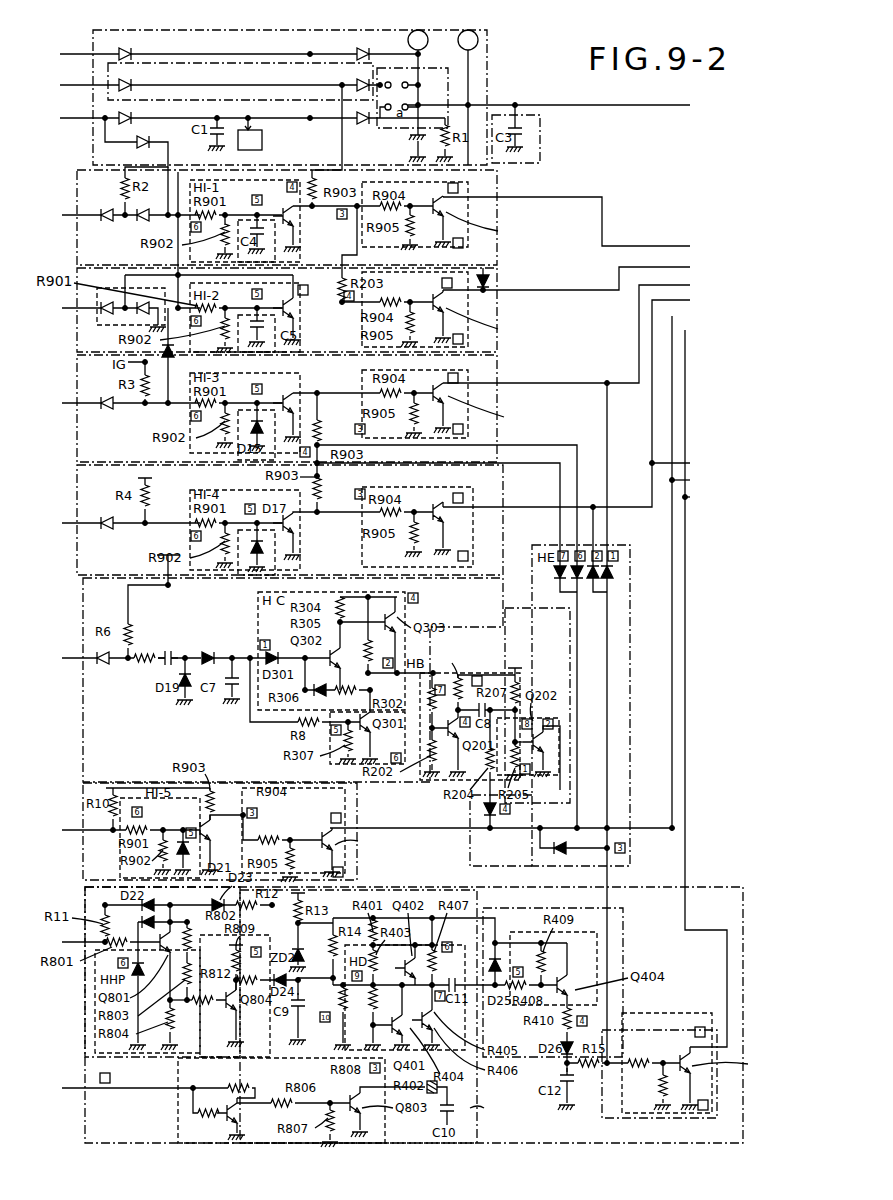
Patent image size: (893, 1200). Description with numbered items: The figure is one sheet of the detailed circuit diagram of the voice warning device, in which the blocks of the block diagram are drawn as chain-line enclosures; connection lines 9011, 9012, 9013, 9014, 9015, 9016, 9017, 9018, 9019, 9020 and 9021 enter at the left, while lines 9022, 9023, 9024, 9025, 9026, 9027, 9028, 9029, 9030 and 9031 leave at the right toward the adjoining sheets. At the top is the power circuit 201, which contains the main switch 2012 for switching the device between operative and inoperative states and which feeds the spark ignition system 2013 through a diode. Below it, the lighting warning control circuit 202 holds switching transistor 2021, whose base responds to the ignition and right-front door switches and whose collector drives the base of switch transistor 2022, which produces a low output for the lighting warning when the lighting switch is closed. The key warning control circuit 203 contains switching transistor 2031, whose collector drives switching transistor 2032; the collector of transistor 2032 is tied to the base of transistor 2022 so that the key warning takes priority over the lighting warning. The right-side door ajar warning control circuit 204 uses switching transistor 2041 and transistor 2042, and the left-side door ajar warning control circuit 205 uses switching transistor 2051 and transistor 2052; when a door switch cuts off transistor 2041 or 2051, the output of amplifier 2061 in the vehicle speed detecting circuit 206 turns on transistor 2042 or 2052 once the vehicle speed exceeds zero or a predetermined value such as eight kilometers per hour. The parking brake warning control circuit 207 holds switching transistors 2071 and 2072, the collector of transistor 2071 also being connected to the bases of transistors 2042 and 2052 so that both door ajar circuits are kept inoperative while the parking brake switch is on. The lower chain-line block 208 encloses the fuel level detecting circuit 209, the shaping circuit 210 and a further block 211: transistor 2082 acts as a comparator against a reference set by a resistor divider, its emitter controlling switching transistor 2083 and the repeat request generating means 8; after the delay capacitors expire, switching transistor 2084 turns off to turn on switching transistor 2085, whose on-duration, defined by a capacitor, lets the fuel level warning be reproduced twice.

The input signal line 9011 is at (231, 47).
The input signal line 9012 is at (231, 81).
The input signal line 9013 is at (244, 131).
The input signal line 9014 is at (121, 237).
The input signal line 9015 is at (168, 302).
The input signal line 9016 is at (121, 358).
The input signal line 9017 is at (121, 516).
The input signal line 9018 is at (154, 660).
The input signal line 9019 is at (116, 823).
The input signal line 9020 is at (96, 942).
The input signal line 9021 is at (120, 1091).
The output signal line 9022 is at (571, 105).
The output signal line 9023 is at (589, 226).
The output signal line 9024 is at (589, 275).
The output signal line 9025 is at (589, 330).
The output signal line 9026 is at (589, 400).
The output signal line 9027 is at (672, 316).
The output signal line 9028 is at (685, 330).
The output signal line 9029 is at (692, 463).
The output signal line 9030 is at (703, 480).
The output signal line 9031 is at (710, 497).
The power circuit 201 is at (487, 100).
The lighting warning control circuit 202 is at (497, 222).
The key warning control circuit 203 is at (497, 320).
The right-side door ajar warning control circuit 204 is at (497, 374).
The left-side door ajar warning control circuit 205 is at (503, 494).
The vehicle speed detecting circuit 206 is at (505, 640).
The parking brake warning control circuit 207 is at (357, 816).
The control circuit block 208 is at (703, 885).
The fuel level detecting circuit 209 is at (100, 908).
The shaping circuit 210 is at (357, 885).
The circuit block 211 is at (545, 908).
The main switch 2012 is at (471, 25).
The spark ignition system 2013 is at (262, 140).
The switching transistor 2021 is at (290, 203).
The switch transistor 2022 is at (472, 213).
The switching transistor 2031 is at (296, 300).
The switching transistor 2032 is at (467, 308).
The switching transistor 2041 is at (300, 384).
The transistor 2042 is at (446, 386).
The switching transistor 2051 is at (296, 510).
The transistor 2052 is at (442, 523).
The amplifier 2061 is at (481, 648).
The switching transistor 2071 is at (202, 836).
The switching transistor 2072 is at (318, 833).
The transistor 2082 is at (150, 944).
The switching transistor 2083 is at (178, 1058).
The switching transistor 2084 is at (232, 1086).
The switching transistor 2085 is at (683, 1045).
The repeat request generating means 8 is at (483, 1107).